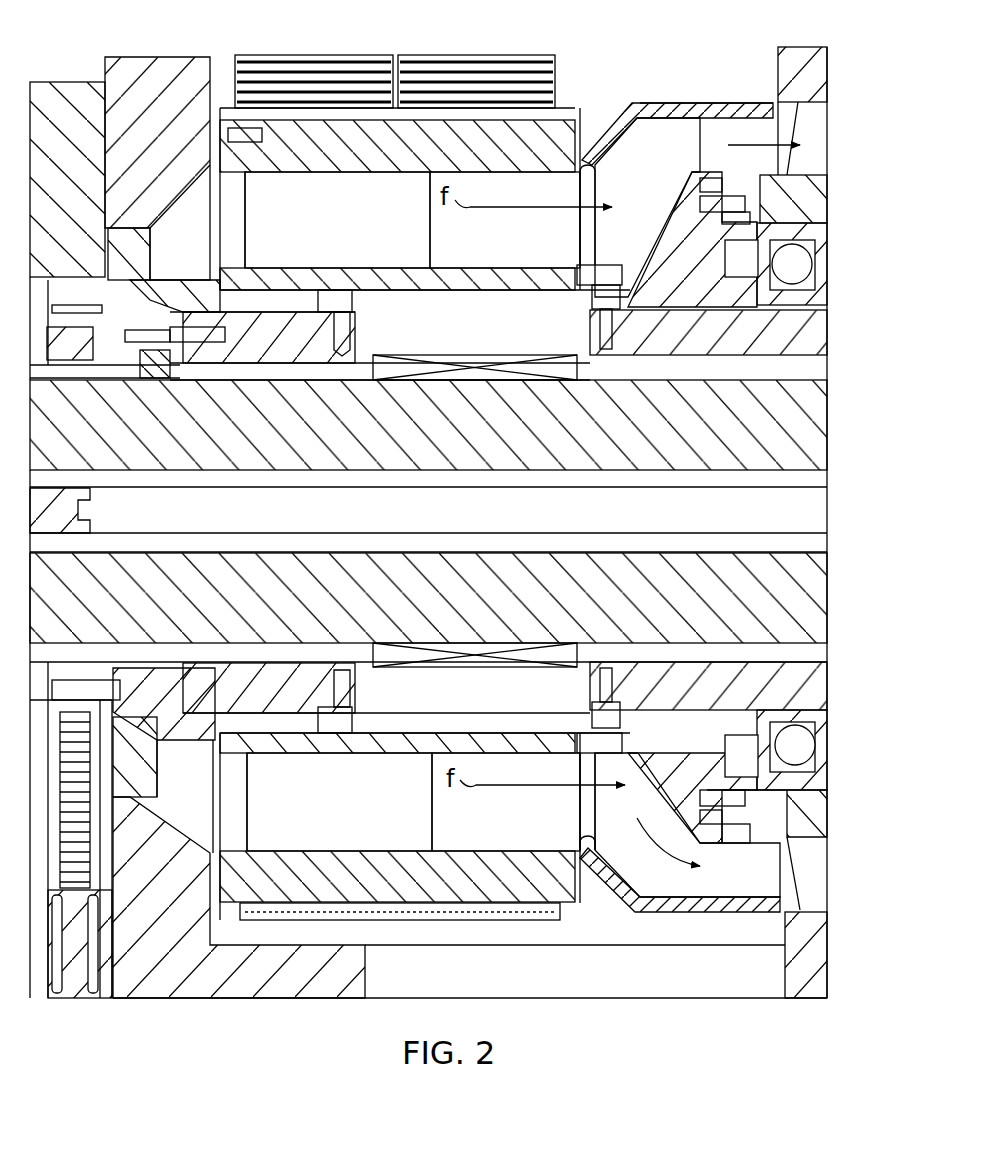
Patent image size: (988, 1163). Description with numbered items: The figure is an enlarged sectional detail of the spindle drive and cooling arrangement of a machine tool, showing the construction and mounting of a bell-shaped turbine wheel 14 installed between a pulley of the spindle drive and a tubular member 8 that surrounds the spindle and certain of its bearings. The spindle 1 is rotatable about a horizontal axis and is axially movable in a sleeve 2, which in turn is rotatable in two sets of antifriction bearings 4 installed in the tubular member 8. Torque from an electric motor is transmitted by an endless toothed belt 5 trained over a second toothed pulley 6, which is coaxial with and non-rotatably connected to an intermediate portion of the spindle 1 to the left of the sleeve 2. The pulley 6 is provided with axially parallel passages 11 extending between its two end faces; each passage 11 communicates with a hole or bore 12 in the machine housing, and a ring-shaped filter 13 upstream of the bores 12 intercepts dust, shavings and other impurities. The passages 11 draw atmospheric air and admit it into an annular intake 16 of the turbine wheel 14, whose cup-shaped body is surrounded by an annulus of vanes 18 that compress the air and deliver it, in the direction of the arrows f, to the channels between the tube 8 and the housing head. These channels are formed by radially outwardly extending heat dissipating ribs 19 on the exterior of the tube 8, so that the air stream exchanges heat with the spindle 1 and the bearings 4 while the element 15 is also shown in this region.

The spindle 1 is at (488, 440).
The sleeve 2 is at (840, 330).
The antifriction bearings 4 is at (795, 272).
The endless toothed belt 5 is at (322, 85).
The second toothed pulley 6 is at (363, 152).
The tubular member 8 is at (752, 205).
The axially parallel passages 11 is at (329, 249).
The hole or bore 12 is at (180, 237).
The ring-shaped filter 13 is at (108, 243).
The turbine wheel 14 is at (677, 96).
The cover plate 15 is at (735, 105).
The annular intake 16 is at (598, 240).
The vanes 18 is at (660, 196).
The heat dissipating ribs 19 is at (798, 866).